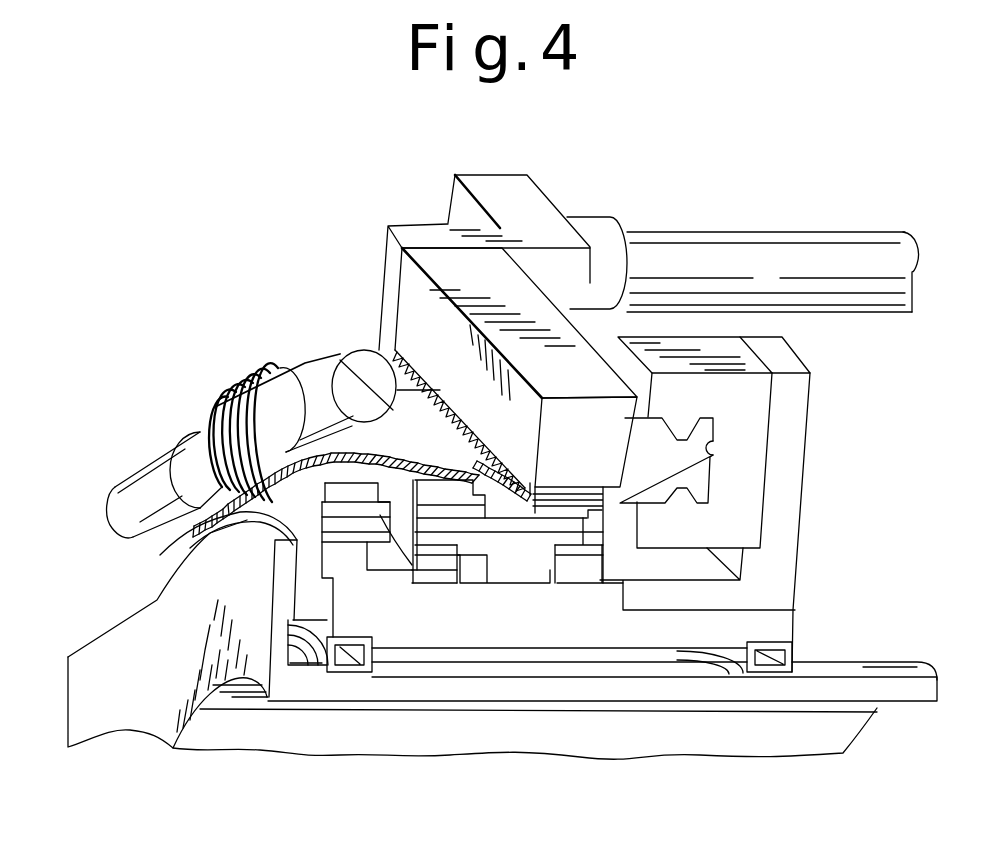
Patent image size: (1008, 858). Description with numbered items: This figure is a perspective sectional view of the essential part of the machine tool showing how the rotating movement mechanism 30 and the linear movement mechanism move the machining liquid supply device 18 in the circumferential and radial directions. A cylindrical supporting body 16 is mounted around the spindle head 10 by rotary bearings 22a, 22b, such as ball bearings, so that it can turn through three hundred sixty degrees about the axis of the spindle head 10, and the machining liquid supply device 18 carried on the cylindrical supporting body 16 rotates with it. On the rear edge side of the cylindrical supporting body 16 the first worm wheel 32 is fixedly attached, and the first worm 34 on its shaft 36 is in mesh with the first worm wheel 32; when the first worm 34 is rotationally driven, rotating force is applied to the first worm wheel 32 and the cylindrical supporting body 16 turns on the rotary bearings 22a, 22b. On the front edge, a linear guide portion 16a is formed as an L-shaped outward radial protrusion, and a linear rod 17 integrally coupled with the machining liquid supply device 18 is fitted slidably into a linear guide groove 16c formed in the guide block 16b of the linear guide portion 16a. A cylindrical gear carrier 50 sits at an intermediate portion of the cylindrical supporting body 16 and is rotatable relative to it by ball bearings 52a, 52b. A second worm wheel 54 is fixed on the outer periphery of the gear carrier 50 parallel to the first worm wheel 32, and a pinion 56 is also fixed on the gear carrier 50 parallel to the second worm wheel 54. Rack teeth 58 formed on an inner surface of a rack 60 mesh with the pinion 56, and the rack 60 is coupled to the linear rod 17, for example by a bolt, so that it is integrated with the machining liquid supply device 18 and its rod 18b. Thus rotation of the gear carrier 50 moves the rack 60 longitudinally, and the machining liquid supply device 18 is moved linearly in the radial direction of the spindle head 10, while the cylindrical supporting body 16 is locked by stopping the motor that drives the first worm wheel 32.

The spindle head 10 is at (140, 700).
The cylindrical supporting body 16 is at (502, 638).
The linear guide portion 16a is at (785, 463).
The guide block 16b is at (743, 508).
The hole 16c is at (713, 455).
The linear rod 17 is at (655, 440).
The machining liquid supply device 18 is at (510, 188).
The rod 18b is at (752, 252).
The rotary bearing 22a is at (348, 668).
The rotary bearing 22b is at (767, 674).
The rotating movement mechanism 30 is at (193, 412).
The first worm wheel 32 is at (172, 547).
The first worm 34 is at (232, 392).
The shaft 36 is at (147, 487).
The gear carrier 50 is at (533, 522).
The ball bearing 52a is at (432, 565).
The ball bearing 52b is at (575, 560).
The second worm wheel 54 is at (340, 360).
The pinion 56 is at (494, 482).
The rack teeth 58 is at (413, 352).
The rack 60 is at (412, 292).